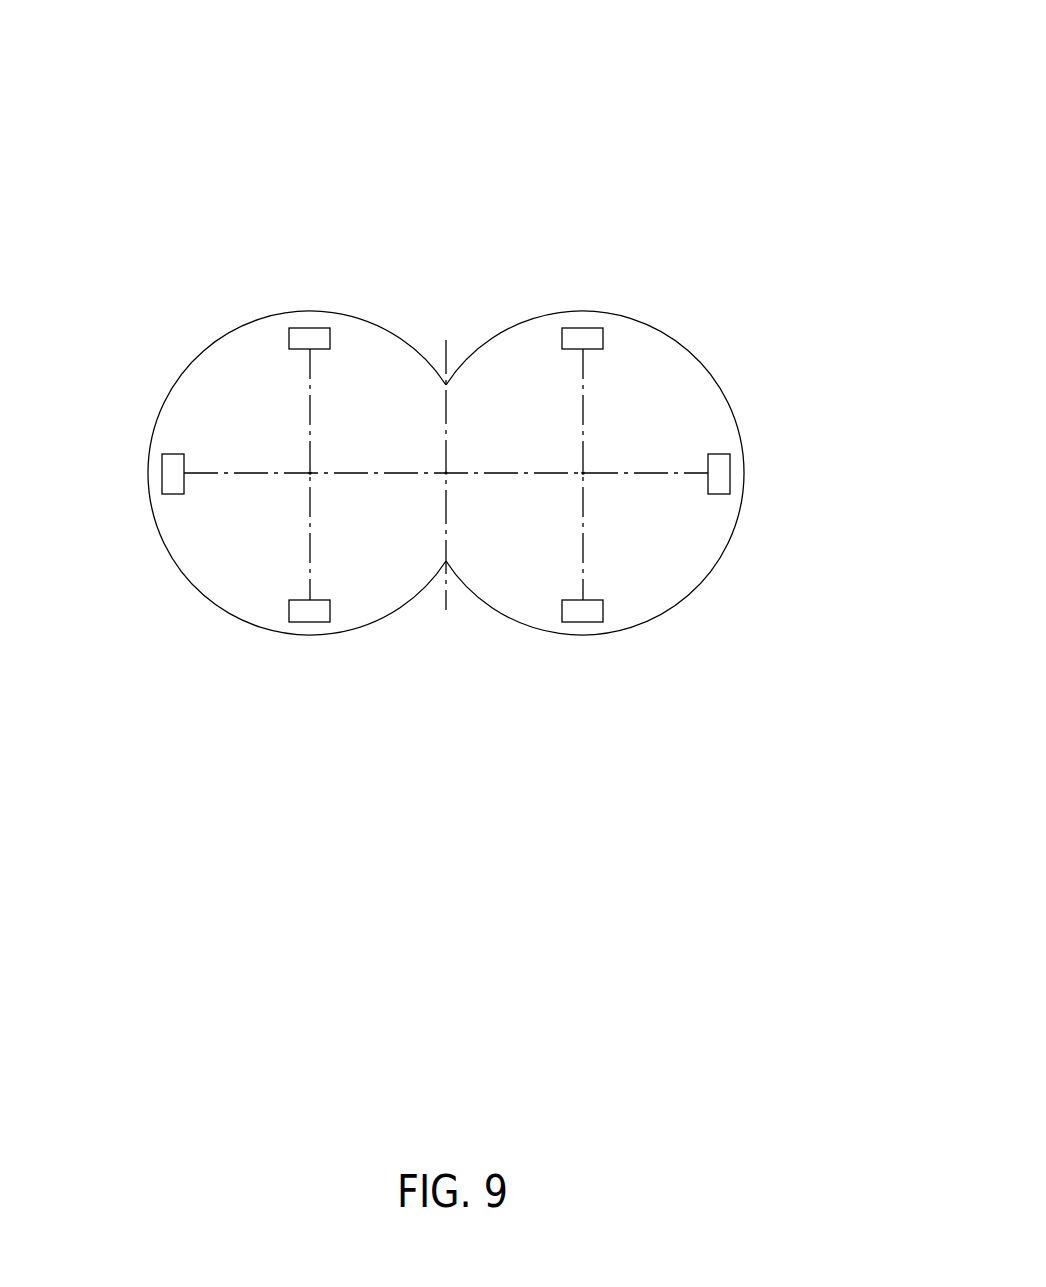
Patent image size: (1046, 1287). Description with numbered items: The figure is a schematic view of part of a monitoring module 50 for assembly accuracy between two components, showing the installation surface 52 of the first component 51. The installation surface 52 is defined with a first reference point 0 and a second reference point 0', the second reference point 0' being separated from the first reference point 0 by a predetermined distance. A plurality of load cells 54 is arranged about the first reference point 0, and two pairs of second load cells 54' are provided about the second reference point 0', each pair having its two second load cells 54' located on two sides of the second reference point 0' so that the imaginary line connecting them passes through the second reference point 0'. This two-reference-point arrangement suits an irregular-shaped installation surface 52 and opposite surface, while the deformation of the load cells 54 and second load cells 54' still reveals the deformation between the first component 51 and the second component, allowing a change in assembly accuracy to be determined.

The monitoring module 50 is at (722, 113).
The first component 51 is at (740, 424).
The installation surface 52 is at (682, 423).
The first reference point 0 is at (363, 386).
The second reference point 0' is at (644, 401).
The load cell 54 is at (179, 469).
The second load cell 54' is at (694, 469).